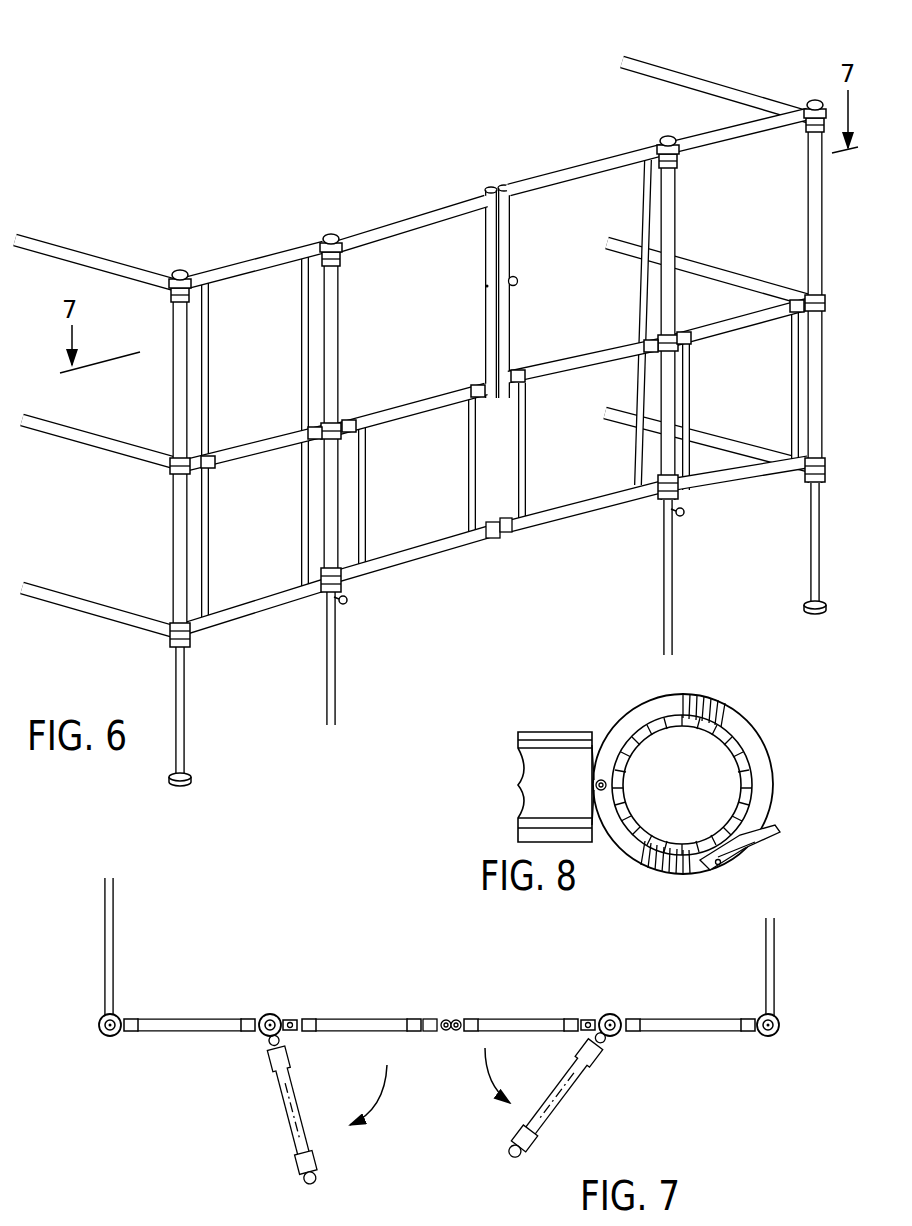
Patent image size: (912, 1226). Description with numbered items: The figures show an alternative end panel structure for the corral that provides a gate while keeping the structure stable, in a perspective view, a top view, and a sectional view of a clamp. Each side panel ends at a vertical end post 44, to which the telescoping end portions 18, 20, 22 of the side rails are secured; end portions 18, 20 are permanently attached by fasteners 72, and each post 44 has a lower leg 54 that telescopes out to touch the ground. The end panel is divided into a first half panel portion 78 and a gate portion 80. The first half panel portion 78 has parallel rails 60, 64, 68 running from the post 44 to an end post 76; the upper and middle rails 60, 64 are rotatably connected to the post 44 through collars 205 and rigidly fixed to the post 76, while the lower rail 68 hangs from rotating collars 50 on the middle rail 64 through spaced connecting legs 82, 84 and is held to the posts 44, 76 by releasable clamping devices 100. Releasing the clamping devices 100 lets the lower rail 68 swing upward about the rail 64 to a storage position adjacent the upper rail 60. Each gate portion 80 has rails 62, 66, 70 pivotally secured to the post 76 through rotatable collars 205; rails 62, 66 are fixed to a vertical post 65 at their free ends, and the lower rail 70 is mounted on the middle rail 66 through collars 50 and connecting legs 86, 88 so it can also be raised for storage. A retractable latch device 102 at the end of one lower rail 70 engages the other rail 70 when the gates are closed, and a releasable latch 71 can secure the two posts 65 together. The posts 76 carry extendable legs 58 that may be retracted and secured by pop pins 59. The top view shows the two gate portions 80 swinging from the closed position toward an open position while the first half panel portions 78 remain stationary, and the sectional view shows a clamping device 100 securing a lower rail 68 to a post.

In FIG. 6, the telescoping end portion 18 is at (150, 266).
In FIG. 7, the telescoping end portion 18 is at (105, 940).
In FIG. 6, the telescoping end portion 20 is at (130, 447).
In FIG. 6, the telescoping end portion 22 is at (92, 602).
In FIG. 6, the vertical end post 44 is at (177, 532).
In FIG. 7, the vertical end post 44 is at (102, 1034).
In FIG. 6, the rotating collar 50 is at (215, 455).
In FIG. 7, the rotating collar 50 is at (245, 1034).
In FIG. 6, the lower leg 54 is at (188, 732).
In FIG. 6, the extendable leg 58 is at (340, 697).
In FIG. 6, the pop pin 59 is at (345, 614).
In FIG. 6, the upper rail 60 is at (275, 268).
In FIG. 6, the upper rail 62 is at (400, 228).
In FIG. 6, the middle rail 64 is at (256, 448).
In FIG. 7, the middle rail 64 is at (185, 1018).
In FIG. 6, the vertical post 65 is at (500, 320).
In FIG. 6, the middle rail 66 is at (415, 418).
In FIG. 7, the middle rail 66 is at (345, 1020).
In FIG. 6, the lower rail 68 is at (250, 620).
In FIG. 8, the lower rail 68 is at (560, 757).
In FIG. 6, the lower rail 70 is at (425, 556).
In FIG. 6, the releasable latch 71 is at (518, 290).
In FIG. 6, the fastener 72 is at (188, 275).
In FIG. 7, the fastener 72 is at (100, 1020).
In FIG. 6, the end post 76 is at (322, 488).
In FIG. 7, the end post 76 is at (272, 1012).
In FIG. 6, the first half panel portion 78 is at (296, 227).
In FIG. 7, the first half panel portion 78 is at (201, 1010).
In FIG. 6, the gate portion 80 is at (448, 200).
In FIG. 7, the gate portion 80 is at (376, 1010).
In FIG. 6, the connecting leg 82 is at (208, 542).
In FIG. 6, the connecting leg 84 is at (302, 518).
In FIG. 6, the connecting leg 86 is at (368, 456).
In FIG. 6, the connecting leg 88 is at (470, 505).
In FIG. 6, the releasable clamping device 100 is at (195, 640).
In FIG. 8, the releasable clamping device 100 is at (748, 735).
In FIG. 6, the retractable latch device 102 is at (498, 548).
In FIG. 6, the rotatable collar 205 is at (175, 292).